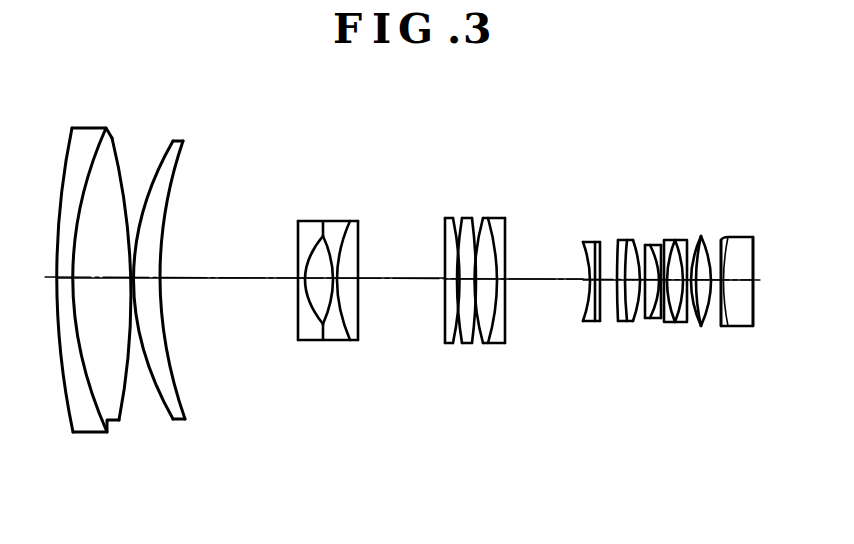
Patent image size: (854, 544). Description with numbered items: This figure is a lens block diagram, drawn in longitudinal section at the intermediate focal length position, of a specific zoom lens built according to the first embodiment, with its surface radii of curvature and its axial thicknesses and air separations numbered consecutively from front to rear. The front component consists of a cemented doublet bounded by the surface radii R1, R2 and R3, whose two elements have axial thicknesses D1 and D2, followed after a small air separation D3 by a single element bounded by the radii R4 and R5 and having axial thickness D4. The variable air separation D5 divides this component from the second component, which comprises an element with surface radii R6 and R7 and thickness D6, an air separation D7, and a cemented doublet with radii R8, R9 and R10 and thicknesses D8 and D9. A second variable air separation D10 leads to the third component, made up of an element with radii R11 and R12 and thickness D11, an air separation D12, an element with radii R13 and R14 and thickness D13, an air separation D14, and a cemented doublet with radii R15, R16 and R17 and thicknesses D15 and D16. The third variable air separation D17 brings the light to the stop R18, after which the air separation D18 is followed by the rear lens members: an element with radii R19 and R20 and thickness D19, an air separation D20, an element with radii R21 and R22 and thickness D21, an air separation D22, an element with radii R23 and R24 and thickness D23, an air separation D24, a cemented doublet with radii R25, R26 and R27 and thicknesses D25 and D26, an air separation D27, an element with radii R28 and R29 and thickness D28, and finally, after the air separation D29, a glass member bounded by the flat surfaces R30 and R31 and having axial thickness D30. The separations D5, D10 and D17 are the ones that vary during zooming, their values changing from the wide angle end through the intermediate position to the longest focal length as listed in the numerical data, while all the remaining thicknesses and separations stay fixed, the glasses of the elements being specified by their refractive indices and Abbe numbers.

The radius of curvature R1 is at (72, 130).
The radius of curvature R2 is at (104, 132).
The radius of curvature R3 is at (114, 159).
The radius of curvature R4 is at (158, 150).
The radius of curvature R5 is at (184, 153).
The radius of curvature R6 is at (300, 238).
The radius of curvature R7 is at (309, 243).
The radius of curvature R8 is at (328, 239).
The radius of curvature R9 is at (338, 240).
The radius of curvature R10 is at (359, 238).
The radius of curvature R11 is at (445, 233).
The radius of curvature R12 is at (449, 228).
The radius of curvature R13 is at (459, 224).
The radius of curvature R14 is at (473, 228).
The radius of curvature R15 is at (485, 229).
The radius of curvature R16 is at (503, 237).
The radius of curvature R17 is at (509, 233).
The stop R18 is at (577, 236).
The radius of curvature R19 is at (592, 243).
The radius of curvature R20 is at (596, 248).
The radius of curvature R21 is at (616, 240).
The radius of curvature R22 is at (625, 243).
The radius of curvature R23 is at (638, 247).
The radius of curvature R24 is at (653, 245).
The radius of curvature R25 is at (665, 247).
The radius of curvature R26 is at (682, 241).
The radius of curvature R27 is at (693, 240).
The radius of curvature R28 is at (710, 236).
The radius of curvature R29 is at (723, 240).
The radius of curvature R30 is at (754, 238).
The radius of curvature R31 is at (755, 250).
The axial thickness D1 is at (68, 282).
The axial thickness D2 is at (102, 282).
The air separation D3 is at (125, 282).
The axial thickness D4 is at (150, 282).
The air separation D5 is at (237, 280).
The axial thickness D6 is at (302, 288).
The air separation D7 is at (308, 307).
The axial thickness D8 is at (332, 297).
The axial thickness D9 is at (342, 283).
The air separation D10 is at (405, 282).
The axial thickness D11 is at (452, 293).
The air separation D12 is at (458, 286).
The axial thickness D13 is at (478, 285).
The air separation D14 is at (490, 292).
The axial thickness D15 is at (500, 324).
The axial thickness D16 is at (500, 296).
The air separation D17 is at (542, 283).
The air separation D18 is at (583, 323).
The axial thickness D19 is at (596, 293).
The air separation D20 is at (607, 300).
The axial thickness D21 is at (625, 300).
The air separation D22 is at (637, 300).
The axial thickness D23 is at (652, 300).
The air separation D24 is at (662, 300).
The axial thickness D25 is at (676, 300).
The axial thickness D26 is at (688, 300).
The air separation D27 is at (702, 300).
The axial thickness D28 is at (718, 300).
The air separation D29 is at (730, 285).
The axial thickness D30 is at (758, 295).